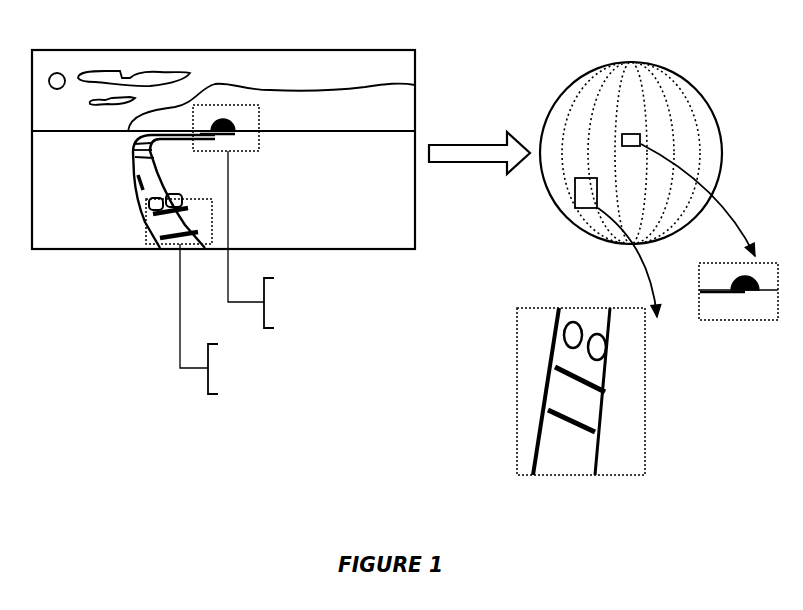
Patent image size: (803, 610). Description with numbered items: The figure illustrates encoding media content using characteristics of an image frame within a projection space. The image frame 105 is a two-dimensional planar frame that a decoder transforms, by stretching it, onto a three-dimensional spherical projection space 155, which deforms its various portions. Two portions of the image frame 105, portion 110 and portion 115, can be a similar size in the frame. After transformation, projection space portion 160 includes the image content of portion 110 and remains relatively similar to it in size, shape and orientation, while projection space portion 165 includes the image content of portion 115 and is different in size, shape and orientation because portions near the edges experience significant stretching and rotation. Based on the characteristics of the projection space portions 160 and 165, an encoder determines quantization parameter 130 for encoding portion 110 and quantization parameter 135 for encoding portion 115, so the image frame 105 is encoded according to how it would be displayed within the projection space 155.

The image frame 105 is at (108, 50).
The portion of image frame 110 is at (259, 136).
The portion of image frame 115 is at (212, 212).
The quantization parameter 130 is at (360, 300).
The quantization parameter 135 is at (297, 366).
The projection space 155 is at (632, 61).
The projection space portion 160 is at (633, 132).
The projection space portion 165 is at (575, 184).